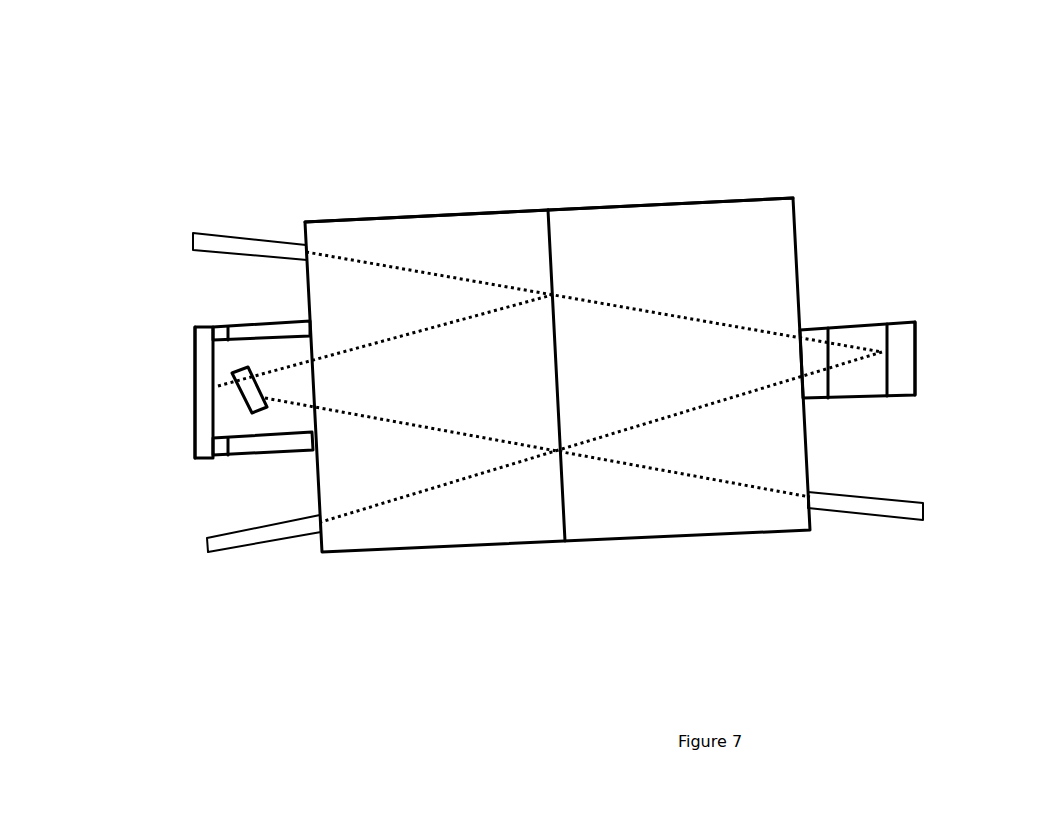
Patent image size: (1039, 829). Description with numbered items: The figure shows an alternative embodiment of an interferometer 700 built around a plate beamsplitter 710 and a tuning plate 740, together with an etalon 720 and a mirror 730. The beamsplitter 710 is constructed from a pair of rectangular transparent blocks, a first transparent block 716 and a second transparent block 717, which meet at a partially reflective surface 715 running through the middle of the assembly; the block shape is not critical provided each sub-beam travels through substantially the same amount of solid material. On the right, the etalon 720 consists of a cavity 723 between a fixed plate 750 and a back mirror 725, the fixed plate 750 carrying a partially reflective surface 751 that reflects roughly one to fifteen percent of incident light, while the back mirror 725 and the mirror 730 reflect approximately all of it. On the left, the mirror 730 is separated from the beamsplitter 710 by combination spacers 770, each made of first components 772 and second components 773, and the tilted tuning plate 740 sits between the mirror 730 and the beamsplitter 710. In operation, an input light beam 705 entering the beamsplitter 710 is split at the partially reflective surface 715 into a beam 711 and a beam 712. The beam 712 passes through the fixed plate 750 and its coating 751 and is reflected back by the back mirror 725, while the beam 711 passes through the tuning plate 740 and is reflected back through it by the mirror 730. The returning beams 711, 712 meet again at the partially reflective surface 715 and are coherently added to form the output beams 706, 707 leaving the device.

The interferometer 700 is at (352, 113).
The input light beam 705 is at (162, 215).
The output beam 706 is at (202, 570).
The output beam 707 is at (923, 508).
The plate beamsplitter 710 is at (557, 388).
The beam 711 is at (412, 347).
The beam 712 is at (622, 293).
The partially reflective surface 715 is at (550, 208).
The first transparent block 716 is at (378, 220).
The second transparent block 717 is at (667, 203).
The etalon 720 is at (907, 354).
The cavity 723 is at (860, 383).
The back mirror 725 is at (918, 367).
The mirror 730 is at (197, 372).
The tuning plate 740 is at (245, 409).
The fixed plate 750 is at (818, 402).
The partially reflective surface 751 is at (833, 328).
The combination spacer 770 is at (210, 388).
The first component 772 is at (208, 325).
The second component 773 is at (268, 323).